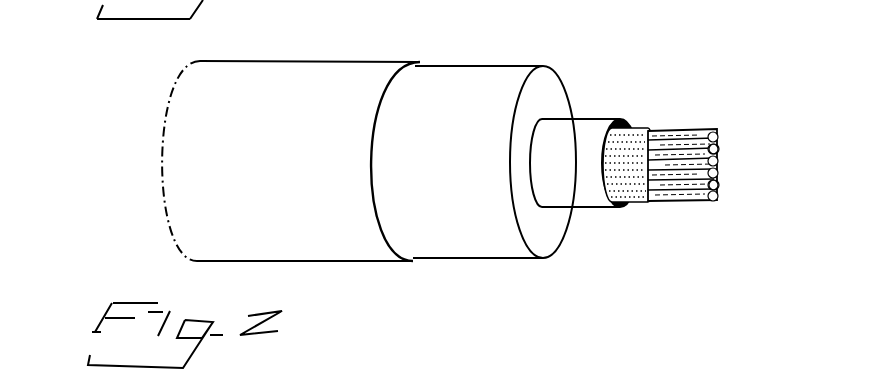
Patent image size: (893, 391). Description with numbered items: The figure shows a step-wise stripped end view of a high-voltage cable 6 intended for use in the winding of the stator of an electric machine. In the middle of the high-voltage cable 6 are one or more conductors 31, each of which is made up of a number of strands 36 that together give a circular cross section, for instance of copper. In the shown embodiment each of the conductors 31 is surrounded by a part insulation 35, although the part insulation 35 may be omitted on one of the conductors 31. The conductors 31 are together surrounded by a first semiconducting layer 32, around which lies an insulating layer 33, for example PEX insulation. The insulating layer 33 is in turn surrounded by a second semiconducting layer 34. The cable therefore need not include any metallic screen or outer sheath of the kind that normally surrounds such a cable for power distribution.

The high-voltage cable 6 is at (125, 45).
The conductors 31 is at (707, 132).
The first semiconducting layer 32 is at (600, 120).
The insulating layer 33 is at (480, 66).
The second semiconducting layer 34 is at (305, 61).
The part insulation 35 is at (645, 126).
The strands 36 is at (727, 187).